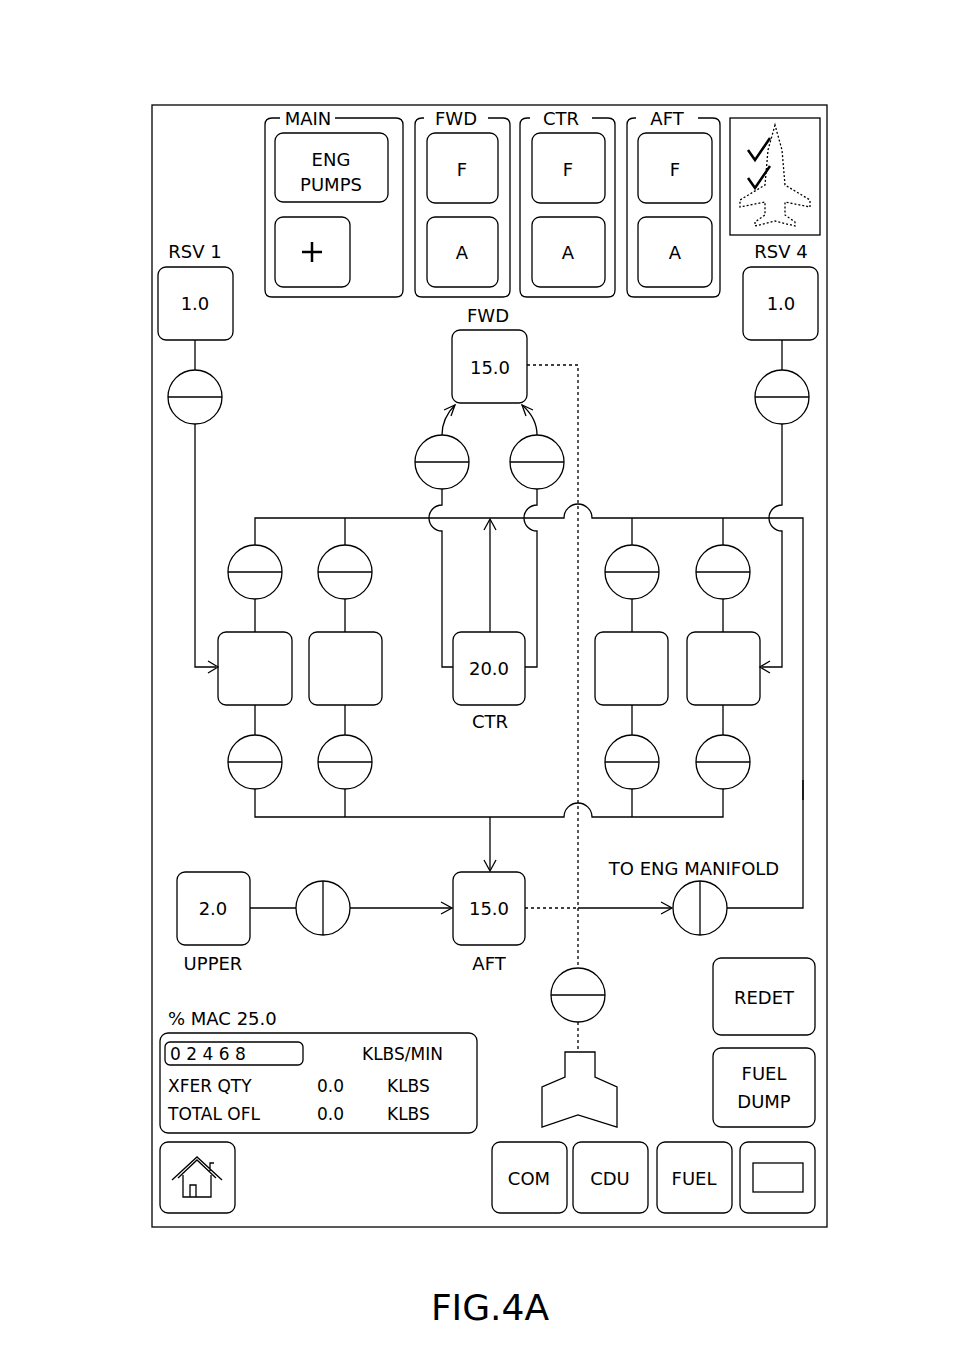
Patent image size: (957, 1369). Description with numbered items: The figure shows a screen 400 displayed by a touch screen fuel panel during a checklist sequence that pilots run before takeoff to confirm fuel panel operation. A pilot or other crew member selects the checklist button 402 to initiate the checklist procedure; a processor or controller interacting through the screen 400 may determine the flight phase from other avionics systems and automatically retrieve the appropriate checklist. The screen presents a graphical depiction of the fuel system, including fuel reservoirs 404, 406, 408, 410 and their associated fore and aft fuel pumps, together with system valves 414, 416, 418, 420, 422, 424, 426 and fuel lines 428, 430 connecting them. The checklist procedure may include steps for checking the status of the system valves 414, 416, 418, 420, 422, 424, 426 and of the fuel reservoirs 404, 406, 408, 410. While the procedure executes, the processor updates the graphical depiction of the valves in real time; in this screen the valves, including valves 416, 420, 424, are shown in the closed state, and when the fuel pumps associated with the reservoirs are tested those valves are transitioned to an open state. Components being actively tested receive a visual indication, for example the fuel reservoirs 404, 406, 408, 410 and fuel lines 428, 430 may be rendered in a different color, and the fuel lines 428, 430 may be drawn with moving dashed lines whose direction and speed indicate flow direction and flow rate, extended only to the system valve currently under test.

The screen 400 is at (137, 28).
The checklist button 402 is at (802, 148).
The fuel reservoir 404 is at (745, 580).
The fuel reservoir 406 is at (612, 705).
The fuel reservoir 408 is at (362, 705).
The fuel reservoir 410 is at (240, 705).
The system valve 414 is at (735, 790).
The system valve 416 is at (655, 580).
The system valve 418 is at (610, 780).
The system valve 420 is at (375, 578).
The system valve 422 is at (362, 785).
The system valve 424 is at (242, 548).
The system valve 426 is at (240, 785).
The fuel line 428 is at (803, 780).
The fuel line 430 is at (302, 518).